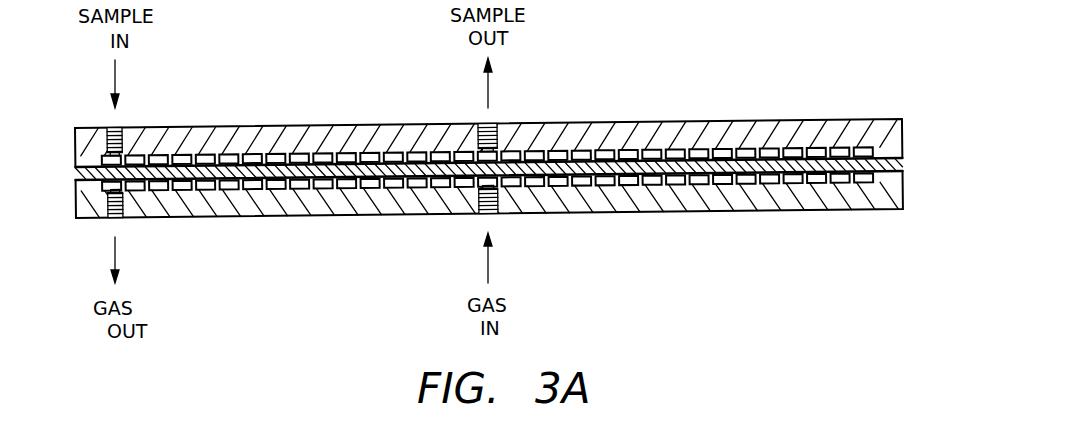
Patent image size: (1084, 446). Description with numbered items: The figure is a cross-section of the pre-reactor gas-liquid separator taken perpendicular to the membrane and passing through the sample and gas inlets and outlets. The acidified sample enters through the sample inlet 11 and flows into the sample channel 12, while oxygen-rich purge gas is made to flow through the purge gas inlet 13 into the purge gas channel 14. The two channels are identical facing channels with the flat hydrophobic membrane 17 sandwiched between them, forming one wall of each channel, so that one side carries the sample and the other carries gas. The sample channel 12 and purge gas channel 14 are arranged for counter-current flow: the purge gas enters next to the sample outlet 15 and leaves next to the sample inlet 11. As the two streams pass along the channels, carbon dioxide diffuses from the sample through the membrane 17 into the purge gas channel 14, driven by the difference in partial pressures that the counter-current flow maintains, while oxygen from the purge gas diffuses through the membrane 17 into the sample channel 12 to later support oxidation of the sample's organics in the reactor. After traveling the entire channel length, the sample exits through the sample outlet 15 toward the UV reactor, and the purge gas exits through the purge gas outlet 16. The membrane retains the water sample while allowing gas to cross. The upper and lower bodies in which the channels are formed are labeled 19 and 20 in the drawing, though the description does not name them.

The sample inlet 11 is at (120, 128).
The sample channel 12 is at (297, 156).
The purge gas inlet 13 is at (493, 214).
The purge gas channel 14 is at (300, 190).
The sample outlet 15 is at (495, 124).
The purge gas outlet 16 is at (118, 219).
The membrane 17 is at (893, 163).
The upper block 19 is at (884, 128).
The lower block 20 is at (884, 205).